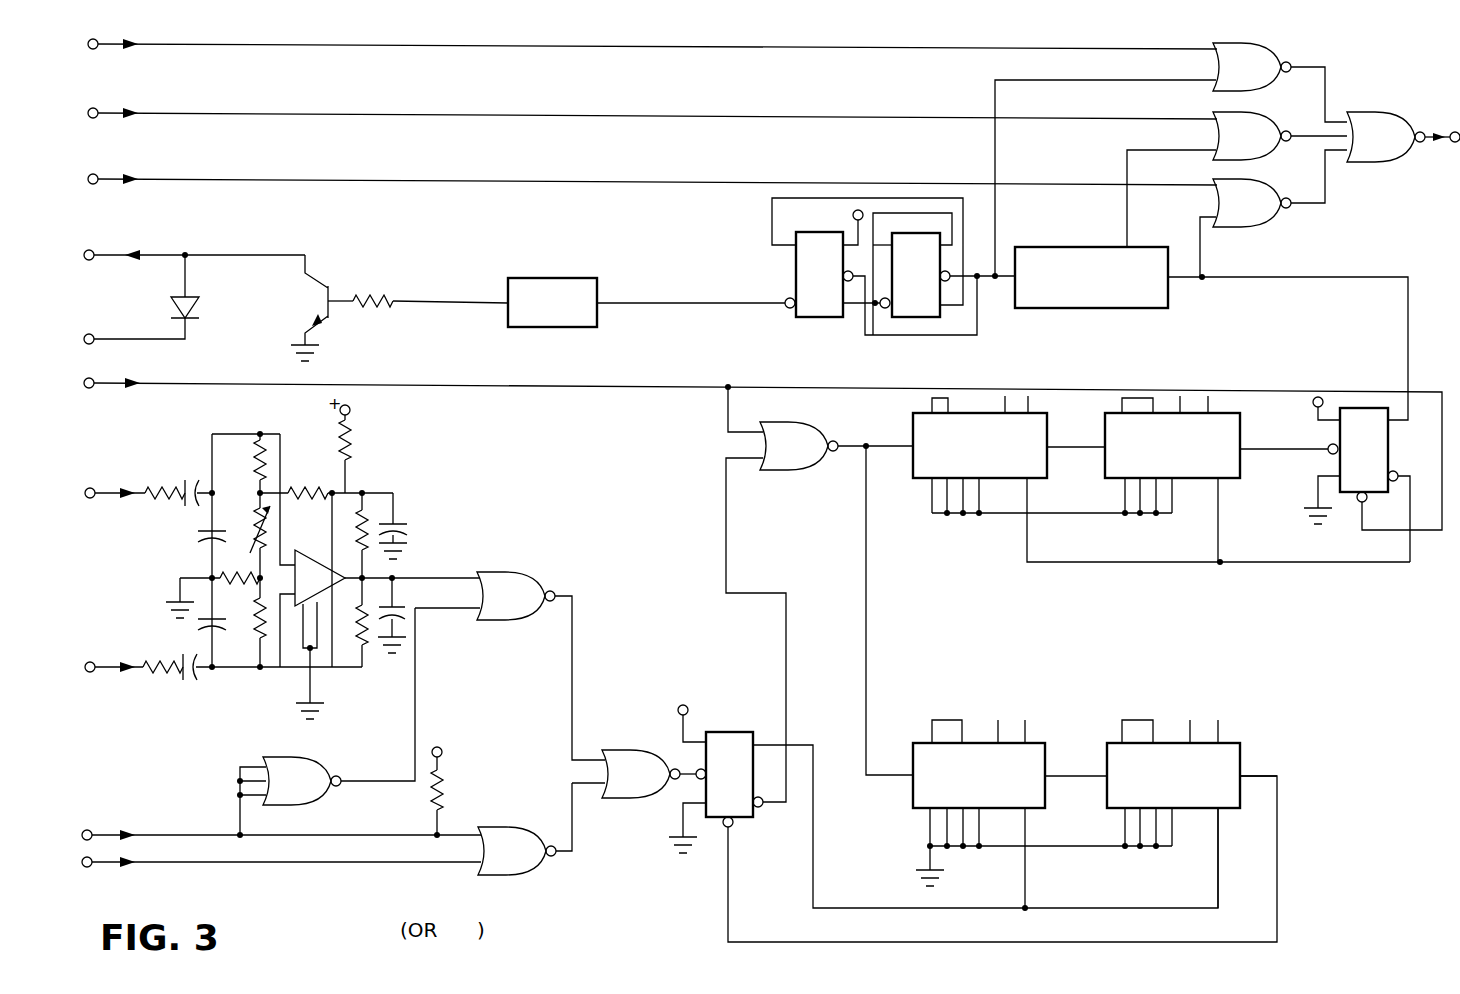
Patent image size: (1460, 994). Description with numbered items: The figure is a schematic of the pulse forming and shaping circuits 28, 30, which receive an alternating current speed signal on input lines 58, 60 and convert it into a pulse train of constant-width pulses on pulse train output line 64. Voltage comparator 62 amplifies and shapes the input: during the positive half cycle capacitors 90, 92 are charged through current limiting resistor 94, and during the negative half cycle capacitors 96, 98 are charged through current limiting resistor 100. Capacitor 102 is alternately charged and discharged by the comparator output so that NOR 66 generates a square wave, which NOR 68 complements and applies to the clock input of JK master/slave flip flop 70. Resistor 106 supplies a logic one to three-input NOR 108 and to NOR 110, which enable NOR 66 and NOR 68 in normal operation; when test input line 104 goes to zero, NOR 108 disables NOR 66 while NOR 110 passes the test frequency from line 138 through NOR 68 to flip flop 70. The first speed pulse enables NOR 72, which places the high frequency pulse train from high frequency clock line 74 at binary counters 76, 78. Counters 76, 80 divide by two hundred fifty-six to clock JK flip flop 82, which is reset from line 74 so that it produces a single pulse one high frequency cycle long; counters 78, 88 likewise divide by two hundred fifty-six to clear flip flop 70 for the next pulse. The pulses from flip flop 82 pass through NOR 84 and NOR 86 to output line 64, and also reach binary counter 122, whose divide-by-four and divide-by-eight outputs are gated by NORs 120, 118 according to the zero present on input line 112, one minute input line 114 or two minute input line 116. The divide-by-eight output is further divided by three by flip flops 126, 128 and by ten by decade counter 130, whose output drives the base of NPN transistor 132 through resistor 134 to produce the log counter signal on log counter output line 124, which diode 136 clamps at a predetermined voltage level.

The pulse forming and shaping circuit 28 is at (770, 490).
The pulse forming and shaping circuit 30 is at (770, 490).
The input line 58 is at (112, 485).
The input line 60 is at (108, 658).
The voltage comparator 62 is at (381, 631).
The pulse train output line 64 is at (1447, 128).
The NOR 66 is at (510, 662).
The NOR 68 is at (634, 772).
The JK master/slave flip flop 70 is at (970, 817).
The NOR 72 is at (819, 594).
The high frequency clock line 74 is at (158, 383).
The binary counter 76 is at (1161, 480).
The binary counter 78 is at (1042, 814).
The binary counter 80 is at (1216, 479).
The JK flip flop 82 is at (1353, 477).
The NOR 84 is at (1273, 213).
The NOR 86 is at (1392, 137).
The binary counter 88 is at (1192, 814).
The capacitor 90 is at (181, 480).
The capacitor 92 is at (200, 541).
The current limiting resistor 94 is at (164, 483).
The capacitor 96 is at (184, 681).
The capacitor 98 is at (199, 625).
The current limiting resistor 100 is at (156, 676).
The capacitor 102 is at (398, 604).
The test input line 104 is at (150, 833).
The resistor 106 is at (452, 778).
The three-input NOR 108 is at (326, 721).
The NOR 110 is at (518, 829).
The input line 112 is at (170, 179).
The one minute input line 114 is at (174, 112).
The two minute input line 116 is at (170, 48).
The NOR 118 is at (1171, 158).
The NOR 120 is at (1237, 178).
The binary counter 122 is at (1179, 333).
The log counter output line 124 is at (105, 255).
The flip flop 126 is at (912, 274).
The flip flop 128 is at (874, 266).
The decade counter 130 is at (589, 302).
The NPN transistor 132 is at (336, 284).
The resistor 134 is at (385, 300).
The diode 136 is at (190, 300).
The line 138 is at (148, 866).